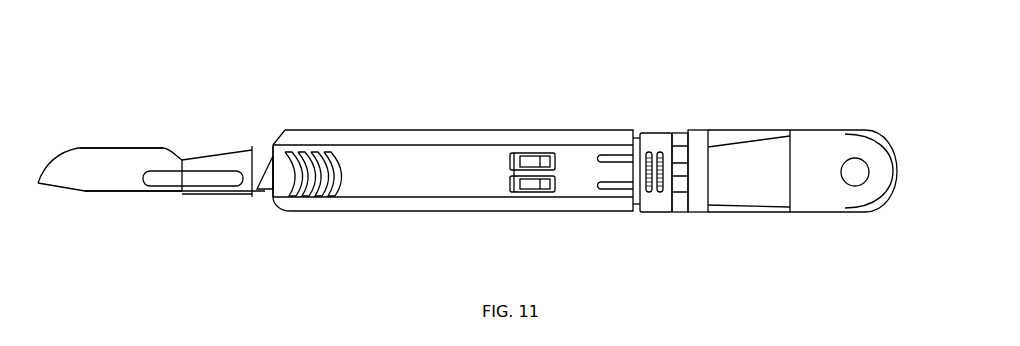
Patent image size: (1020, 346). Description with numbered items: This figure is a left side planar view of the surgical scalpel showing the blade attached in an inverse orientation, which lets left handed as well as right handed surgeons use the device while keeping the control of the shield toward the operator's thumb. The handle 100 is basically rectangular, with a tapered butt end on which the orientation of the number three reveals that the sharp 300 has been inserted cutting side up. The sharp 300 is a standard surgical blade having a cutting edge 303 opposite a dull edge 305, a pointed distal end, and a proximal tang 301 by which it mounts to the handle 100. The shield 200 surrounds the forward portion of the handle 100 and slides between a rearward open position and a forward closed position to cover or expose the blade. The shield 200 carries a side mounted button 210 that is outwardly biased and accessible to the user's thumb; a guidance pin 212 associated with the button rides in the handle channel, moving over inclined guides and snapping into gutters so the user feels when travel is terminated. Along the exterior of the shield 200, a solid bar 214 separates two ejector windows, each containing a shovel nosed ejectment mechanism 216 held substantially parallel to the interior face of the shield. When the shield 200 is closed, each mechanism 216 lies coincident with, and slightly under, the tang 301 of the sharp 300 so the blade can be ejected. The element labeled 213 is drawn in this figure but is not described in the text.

The handle 100 is at (768, 155).
The shield 200 is at (435, 142).
The button 210 is at (662, 205).
The guidance pin 212 is at (677, 137).
The latch housing 213 is at (507, 162).
The solid bar 214 is at (557, 170).
The shovel nosed ejectment mechanism 216 is at (533, 160).
The sharp 300 is at (92, 162).
The tang 301 is at (263, 152).
The cutting edge 303 is at (110, 145).
The dull edge 305 is at (112, 198).